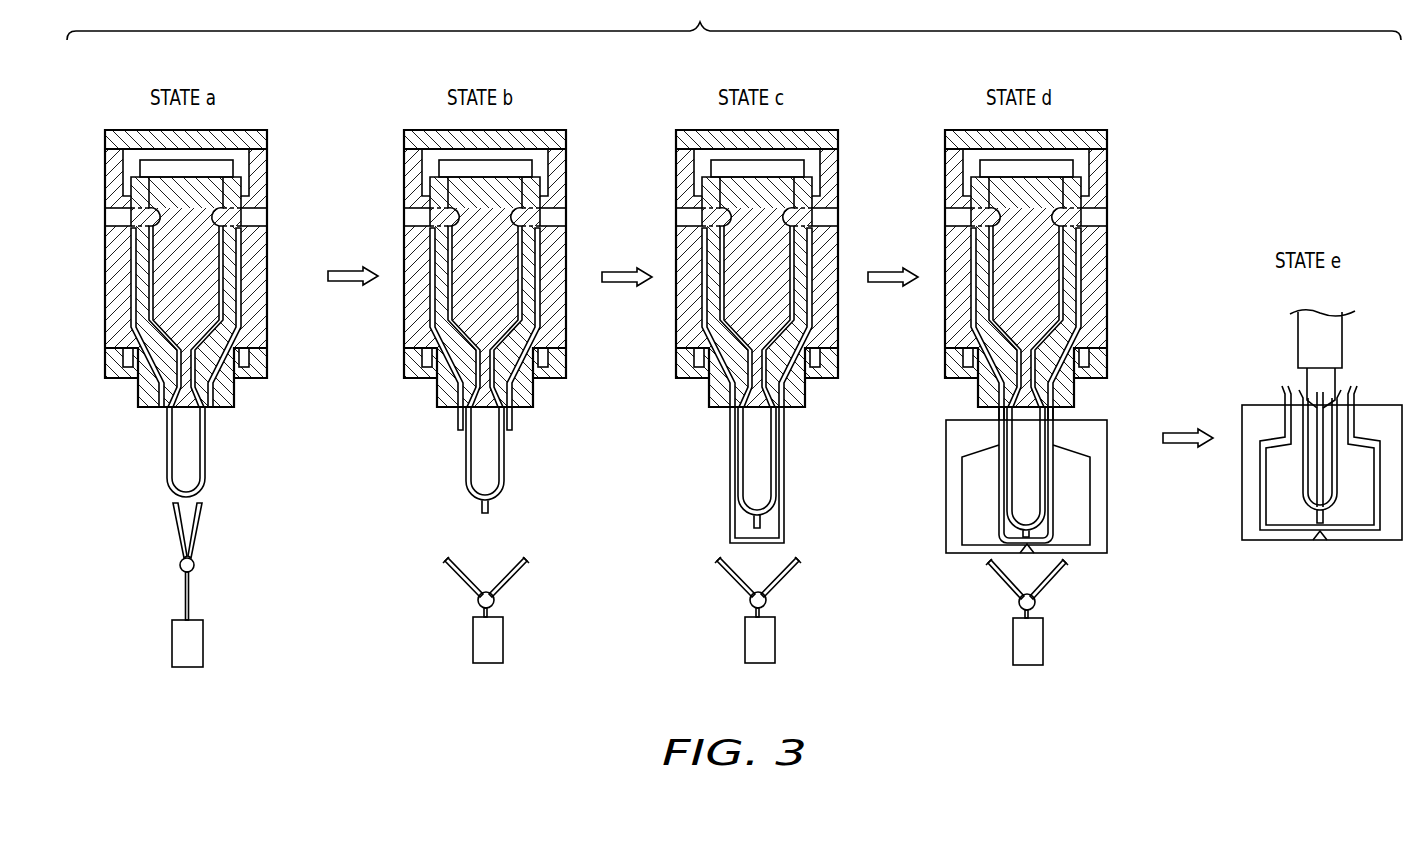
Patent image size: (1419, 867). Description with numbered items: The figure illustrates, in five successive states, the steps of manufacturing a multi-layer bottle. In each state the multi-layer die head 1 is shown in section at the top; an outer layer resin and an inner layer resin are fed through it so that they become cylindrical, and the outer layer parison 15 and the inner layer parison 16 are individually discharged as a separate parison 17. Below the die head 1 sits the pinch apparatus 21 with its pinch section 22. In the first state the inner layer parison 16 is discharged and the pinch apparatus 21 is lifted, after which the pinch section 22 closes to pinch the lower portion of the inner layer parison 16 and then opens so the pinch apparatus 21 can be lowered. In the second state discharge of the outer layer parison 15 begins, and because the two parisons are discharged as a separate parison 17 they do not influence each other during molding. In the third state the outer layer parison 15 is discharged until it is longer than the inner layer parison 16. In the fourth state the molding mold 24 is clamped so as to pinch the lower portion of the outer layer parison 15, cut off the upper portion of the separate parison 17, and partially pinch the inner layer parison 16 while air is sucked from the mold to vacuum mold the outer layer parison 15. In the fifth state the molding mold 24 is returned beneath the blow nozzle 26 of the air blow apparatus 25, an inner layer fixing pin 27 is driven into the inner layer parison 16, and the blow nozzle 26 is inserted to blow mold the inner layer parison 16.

The multi-layer die head 1 is at (270, 192).
The outer layer parison 15 is at (512, 420).
The inner layer parison 16 is at (208, 453).
The separate parison 17 is at (1062, 414).
The pinch apparatus 21 is at (200, 568).
The pinch section 22 is at (199, 535).
The molding mold 24 is at (946, 435).
The air blow apparatus 25 is at (1273, 313).
The blow nozzle 26 is at (1305, 380).
The inner layer fixing pin 27 is at (1320, 433).